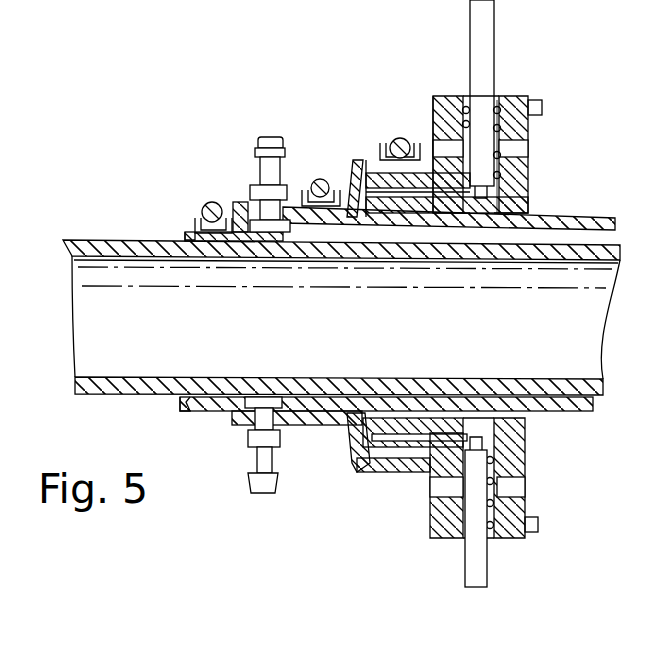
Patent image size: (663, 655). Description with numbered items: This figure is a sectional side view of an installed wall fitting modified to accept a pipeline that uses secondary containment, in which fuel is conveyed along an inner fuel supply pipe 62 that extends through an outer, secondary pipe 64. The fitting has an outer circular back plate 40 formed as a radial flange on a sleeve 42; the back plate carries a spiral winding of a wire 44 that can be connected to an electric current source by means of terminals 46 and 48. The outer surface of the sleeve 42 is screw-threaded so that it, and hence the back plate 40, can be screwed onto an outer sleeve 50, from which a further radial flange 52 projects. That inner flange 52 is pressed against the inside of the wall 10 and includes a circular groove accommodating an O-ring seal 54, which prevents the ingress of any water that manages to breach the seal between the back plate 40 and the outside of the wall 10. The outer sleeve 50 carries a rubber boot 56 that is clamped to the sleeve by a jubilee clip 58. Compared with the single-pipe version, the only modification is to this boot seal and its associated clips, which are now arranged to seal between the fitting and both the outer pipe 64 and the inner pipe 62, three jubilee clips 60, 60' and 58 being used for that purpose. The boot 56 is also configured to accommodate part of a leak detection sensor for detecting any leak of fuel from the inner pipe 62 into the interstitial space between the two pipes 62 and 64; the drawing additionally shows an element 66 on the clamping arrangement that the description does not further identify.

The wall 10 is at (487, 45).
The outer circular back plate 40 is at (517, 97).
The sleeve 42 is at (433, 420).
The wire 44 is at (528, 133).
The terminal 46 is at (543, 107).
The terminal 48 is at (539, 527).
The outer sleeve 50 is at (362, 160).
The inner radial flange 52 is at (432, 522).
The O-ring seal 54 is at (437, 98).
The rubber boot 56 is at (353, 472).
The jubilee clip 58 is at (402, 134).
The jubilee clip 60 is at (213, 199).
The jubilee clip 60' is at (314, 154).
The inner fuel supply pipe 62 is at (570, 414).
The outer secondary pipe 64 is at (568, 218).
The bolt 66 is at (267, 165).